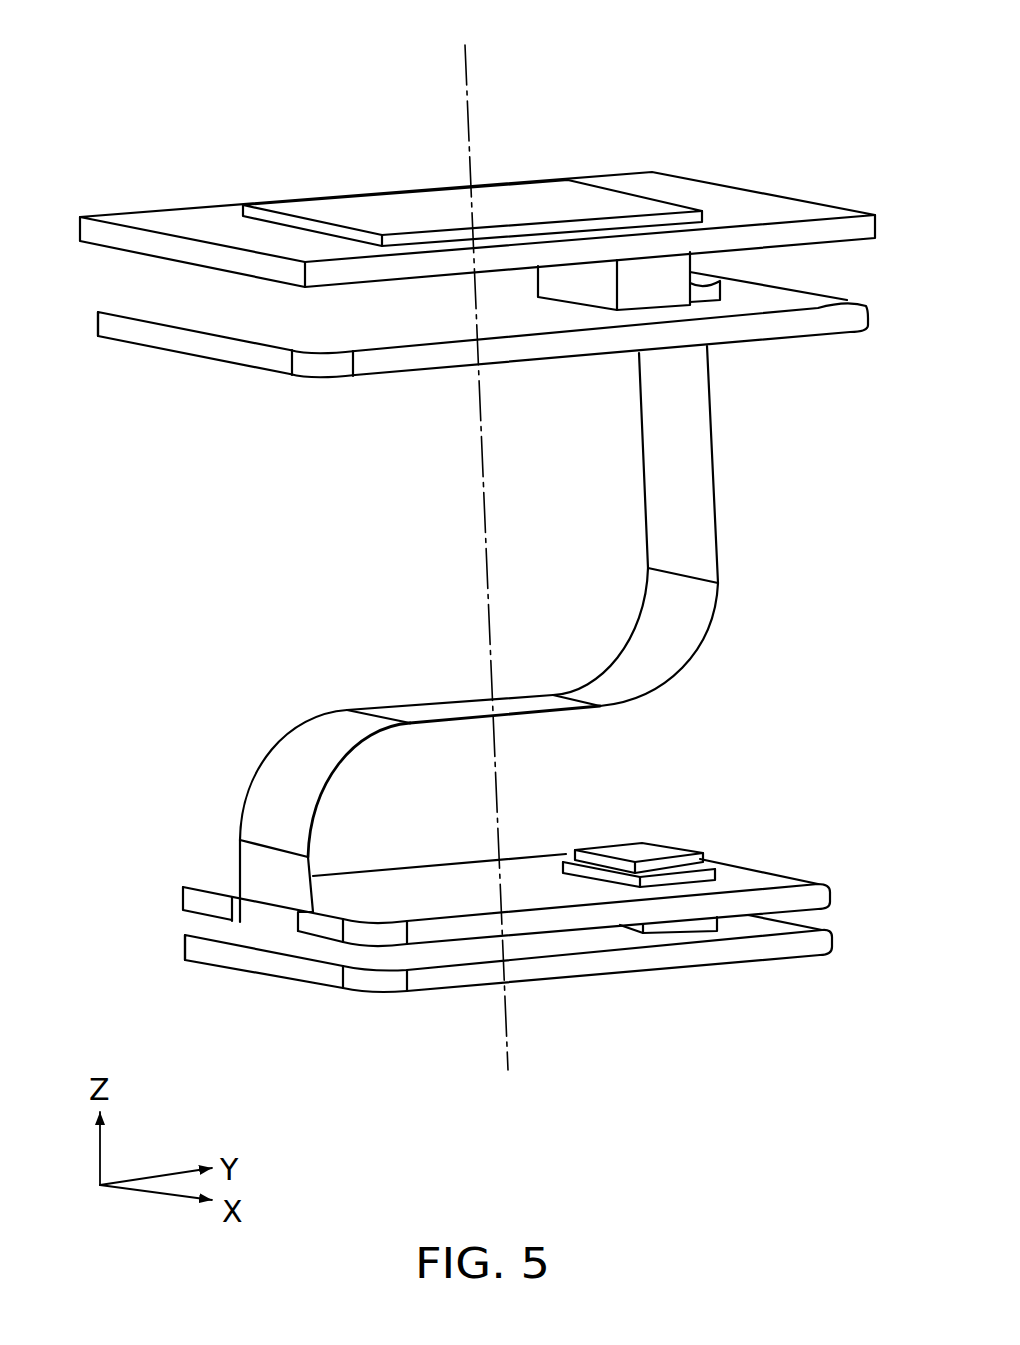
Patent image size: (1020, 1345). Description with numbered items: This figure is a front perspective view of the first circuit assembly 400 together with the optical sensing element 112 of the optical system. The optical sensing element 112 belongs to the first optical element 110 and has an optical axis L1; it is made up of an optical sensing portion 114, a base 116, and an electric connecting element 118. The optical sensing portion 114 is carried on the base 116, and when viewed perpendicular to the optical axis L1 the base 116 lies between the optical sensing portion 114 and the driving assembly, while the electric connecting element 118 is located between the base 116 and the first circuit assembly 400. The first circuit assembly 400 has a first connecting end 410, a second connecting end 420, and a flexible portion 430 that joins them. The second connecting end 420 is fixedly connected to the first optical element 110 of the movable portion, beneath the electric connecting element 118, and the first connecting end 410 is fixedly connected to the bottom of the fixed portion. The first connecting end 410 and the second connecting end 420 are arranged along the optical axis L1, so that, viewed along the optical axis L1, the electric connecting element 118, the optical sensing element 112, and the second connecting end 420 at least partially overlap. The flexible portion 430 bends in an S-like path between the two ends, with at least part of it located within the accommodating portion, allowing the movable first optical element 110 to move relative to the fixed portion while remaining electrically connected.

The first optical element 110 is at (150, 196).
The optical sensing element 112 is at (477, 191).
The optical sensing portion 114 is at (392, 207).
The base 116 is at (773, 212).
The electric connecting element 118 is at (663, 279).
The first circuit assembly 400 is at (188, 555).
The first connecting end 410 is at (232, 875).
The second connecting end 420 is at (717, 352).
The flexible portion 430 is at (713, 658).
The optical axis L1 is at (479, 537).